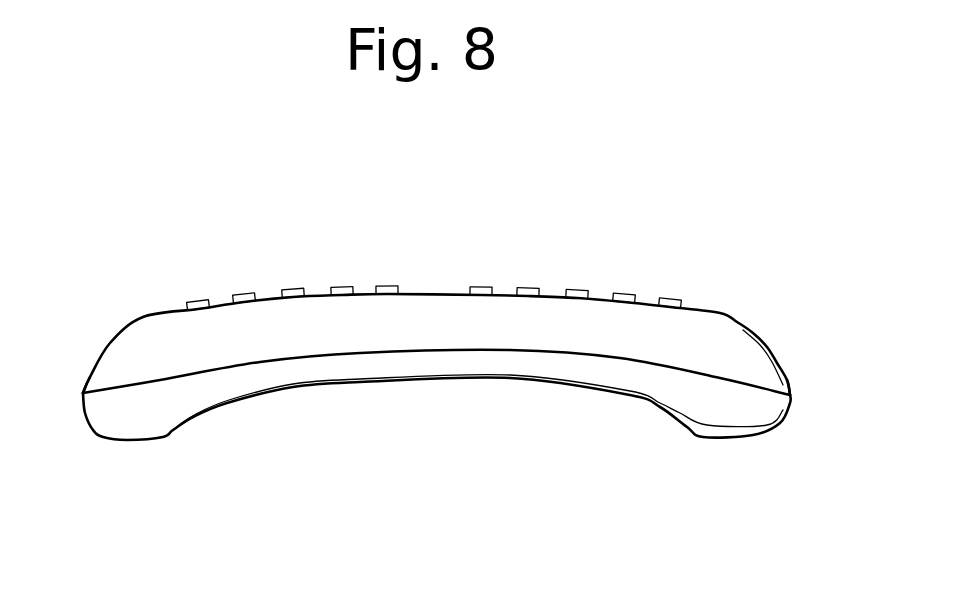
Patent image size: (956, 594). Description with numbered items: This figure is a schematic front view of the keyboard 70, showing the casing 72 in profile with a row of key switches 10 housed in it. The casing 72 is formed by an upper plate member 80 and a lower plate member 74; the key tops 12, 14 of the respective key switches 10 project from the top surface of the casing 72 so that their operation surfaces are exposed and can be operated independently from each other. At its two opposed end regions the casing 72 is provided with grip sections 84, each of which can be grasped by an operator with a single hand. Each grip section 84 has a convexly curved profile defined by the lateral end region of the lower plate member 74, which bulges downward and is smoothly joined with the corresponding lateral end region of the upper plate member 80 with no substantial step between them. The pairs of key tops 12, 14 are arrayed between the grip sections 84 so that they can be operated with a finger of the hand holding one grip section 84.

The keyboard 70 is at (220, 174).
The key switch 10 is at (525, 280).
The key top 12 is at (342, 287).
The key top 14 is at (342, 291).
The upper plate member 80 is at (722, 327).
The casing 72 is at (366, 392).
The lower plate member 74 is at (634, 382).
The grip section 84 is at (83, 400).